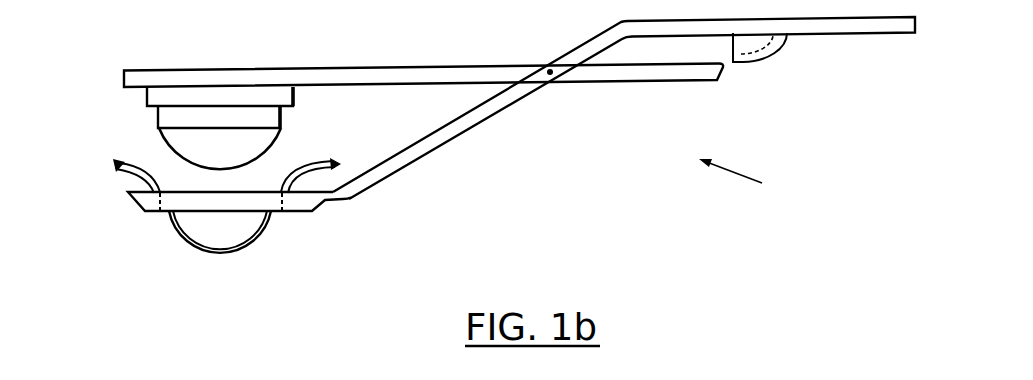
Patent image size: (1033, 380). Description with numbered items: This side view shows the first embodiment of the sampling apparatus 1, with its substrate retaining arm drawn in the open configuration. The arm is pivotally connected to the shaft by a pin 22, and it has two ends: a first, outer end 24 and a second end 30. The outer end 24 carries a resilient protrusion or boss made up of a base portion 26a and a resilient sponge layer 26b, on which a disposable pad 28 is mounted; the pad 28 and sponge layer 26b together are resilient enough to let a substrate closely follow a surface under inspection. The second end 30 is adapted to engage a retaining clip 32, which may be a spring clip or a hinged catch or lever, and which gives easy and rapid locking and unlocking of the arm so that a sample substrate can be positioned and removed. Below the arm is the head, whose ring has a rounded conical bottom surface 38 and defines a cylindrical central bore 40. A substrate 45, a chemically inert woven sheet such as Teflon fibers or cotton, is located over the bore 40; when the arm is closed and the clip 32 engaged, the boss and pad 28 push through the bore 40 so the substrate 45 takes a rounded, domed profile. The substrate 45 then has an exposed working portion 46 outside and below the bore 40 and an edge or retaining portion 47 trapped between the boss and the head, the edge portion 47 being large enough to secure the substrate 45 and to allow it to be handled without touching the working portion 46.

The connector assembly 1 is at (746, 181).
The pin 22 is at (546, 77).
The first, outer end 24 is at (218, 74).
The base portion 26a is at (157, 97).
The sponge layer 26b is at (165, 117).
The disposable pad 28 is at (253, 143).
The second end 30 is at (641, 73).
The retaining clip 32 is at (770, 54).
The rounded conical bottom surface 38 is at (140, 205).
The central bore 40 is at (172, 225).
The substrate 45 is at (224, 254).
The exposed working portion 46 is at (266, 233).
The edge or retaining portion 47 is at (130, 178).